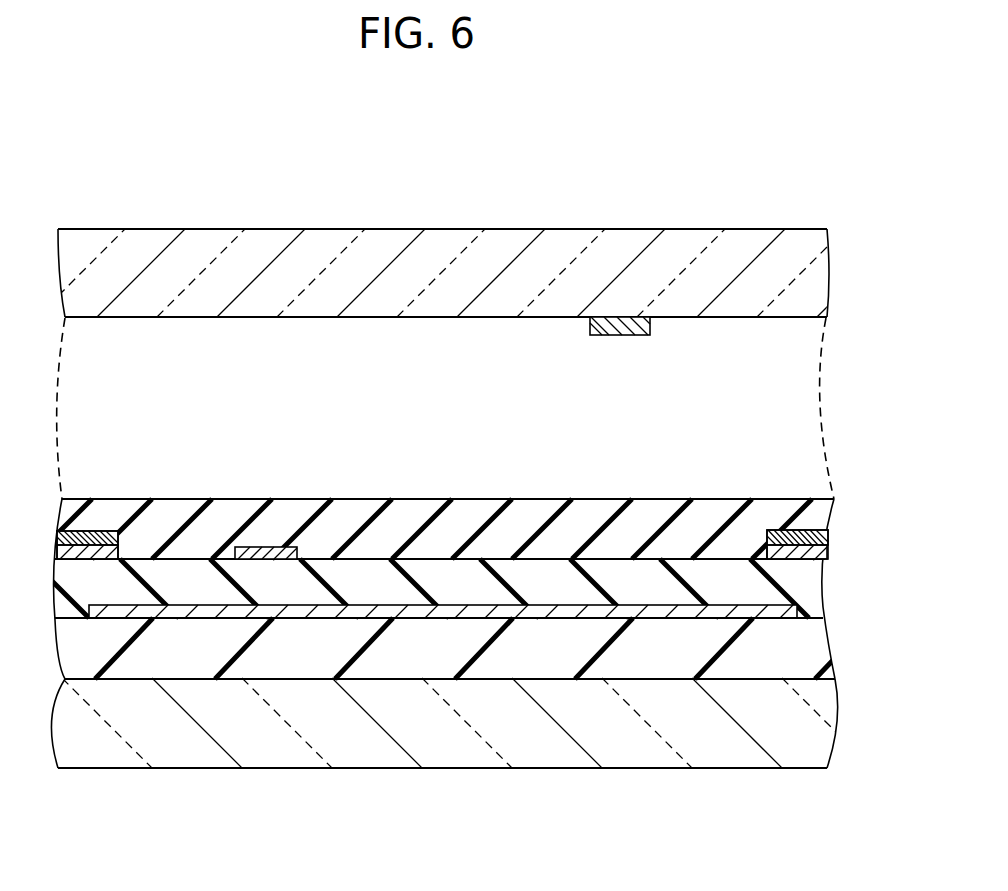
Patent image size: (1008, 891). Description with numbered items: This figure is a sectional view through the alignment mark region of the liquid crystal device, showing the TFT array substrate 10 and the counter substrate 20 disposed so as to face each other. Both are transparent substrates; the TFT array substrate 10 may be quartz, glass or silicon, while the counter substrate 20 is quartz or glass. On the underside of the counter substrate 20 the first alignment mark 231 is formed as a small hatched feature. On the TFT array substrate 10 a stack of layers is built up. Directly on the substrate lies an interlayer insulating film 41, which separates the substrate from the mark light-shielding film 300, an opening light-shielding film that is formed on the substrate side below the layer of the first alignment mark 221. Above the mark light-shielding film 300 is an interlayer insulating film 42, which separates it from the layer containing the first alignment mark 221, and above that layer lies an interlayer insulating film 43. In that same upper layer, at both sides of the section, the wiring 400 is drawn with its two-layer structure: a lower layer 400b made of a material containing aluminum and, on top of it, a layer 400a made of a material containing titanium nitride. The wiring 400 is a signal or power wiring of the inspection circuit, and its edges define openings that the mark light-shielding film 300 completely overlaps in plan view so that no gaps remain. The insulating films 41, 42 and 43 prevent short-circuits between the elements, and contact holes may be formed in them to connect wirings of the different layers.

The TFT array substrate 10 is at (483, 755).
The counter substrate 20 is at (377, 236).
The interlayer insulating film 41 is at (808, 638).
The interlayer insulating film 42 is at (808, 585).
The interlayer insulating film 43 is at (808, 516).
The first alignment mark 221 is at (297, 550).
The first alignment mark 231 is at (594, 324).
The mark light-shielding film 300 is at (355, 613).
The wiring 400 is at (226, 397).
The layer made of a material containing titanium nitride 400a is at (122, 531).
The layer made of a material containing aluminum 400b is at (118, 549).